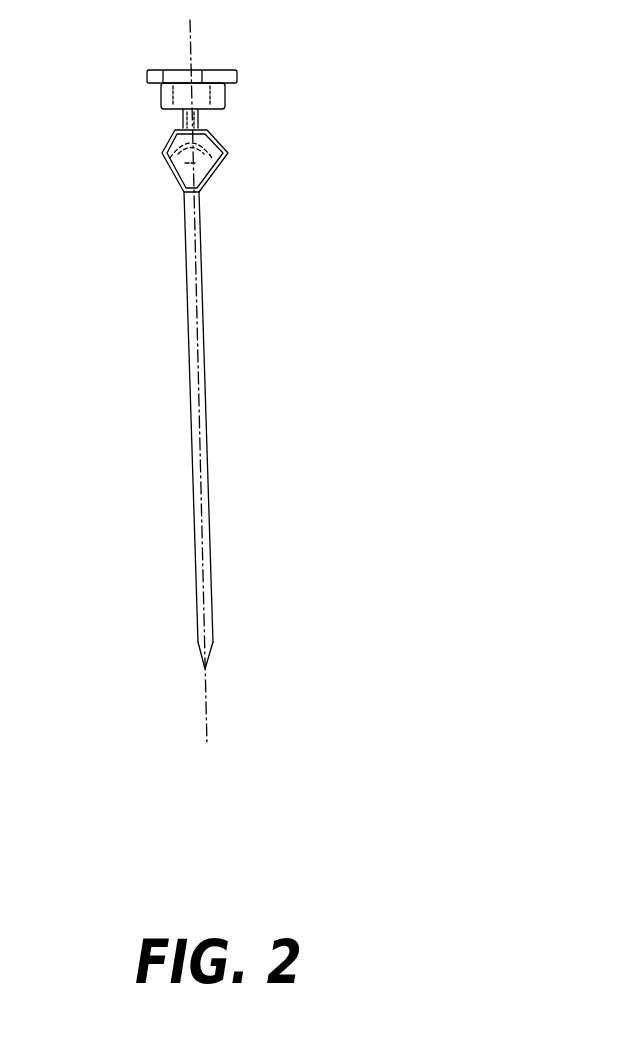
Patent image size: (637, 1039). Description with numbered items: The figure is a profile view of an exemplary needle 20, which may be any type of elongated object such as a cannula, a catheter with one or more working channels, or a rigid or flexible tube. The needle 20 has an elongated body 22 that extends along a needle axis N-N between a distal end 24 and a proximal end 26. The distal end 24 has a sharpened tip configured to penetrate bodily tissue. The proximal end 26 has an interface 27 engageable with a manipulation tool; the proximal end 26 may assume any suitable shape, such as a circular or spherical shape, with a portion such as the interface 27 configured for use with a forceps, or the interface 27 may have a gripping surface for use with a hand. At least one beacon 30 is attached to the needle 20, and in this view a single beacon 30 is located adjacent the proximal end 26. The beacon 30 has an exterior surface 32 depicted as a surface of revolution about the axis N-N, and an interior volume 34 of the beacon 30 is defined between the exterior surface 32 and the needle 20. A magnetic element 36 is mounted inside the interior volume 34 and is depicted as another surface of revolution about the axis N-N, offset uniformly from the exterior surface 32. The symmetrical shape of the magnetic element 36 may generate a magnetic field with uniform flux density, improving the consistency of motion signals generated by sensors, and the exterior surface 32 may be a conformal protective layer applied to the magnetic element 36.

The needle 20 is at (298, 229).
The elongated body 22 is at (258, 435).
The distal end 24 is at (212, 652).
The proximal end 26 is at (237, 71).
The interface 27 is at (161, 95).
The beacon 30 is at (195, 189).
The exterior surface 32 is at (163, 152).
The interior volume 34 is at (225, 160).
The magnetic element 36 is at (182, 165).